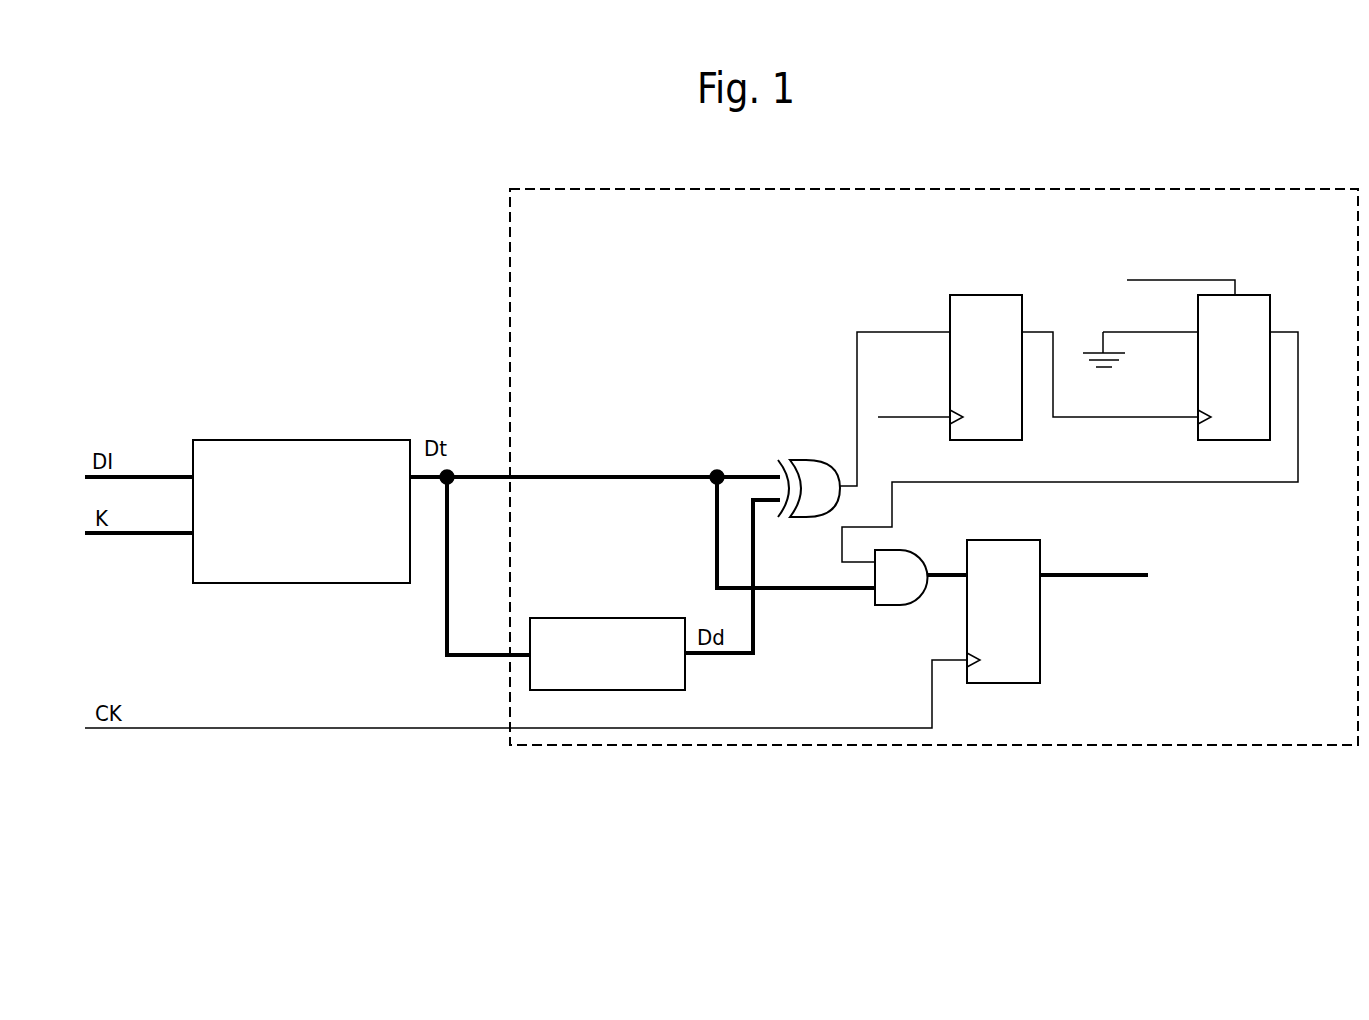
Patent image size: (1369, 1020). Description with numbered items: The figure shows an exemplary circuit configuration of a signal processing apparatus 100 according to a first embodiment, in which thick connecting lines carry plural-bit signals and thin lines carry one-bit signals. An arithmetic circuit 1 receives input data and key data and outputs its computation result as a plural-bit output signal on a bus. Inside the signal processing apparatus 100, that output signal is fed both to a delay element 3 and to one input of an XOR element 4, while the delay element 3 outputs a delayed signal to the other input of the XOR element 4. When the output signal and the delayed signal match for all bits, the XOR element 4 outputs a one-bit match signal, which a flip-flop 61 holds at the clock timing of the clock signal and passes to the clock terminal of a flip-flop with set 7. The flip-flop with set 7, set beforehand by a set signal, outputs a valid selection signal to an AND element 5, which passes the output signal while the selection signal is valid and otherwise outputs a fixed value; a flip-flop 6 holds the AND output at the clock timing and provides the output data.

The signal processing apparatus 100 is at (962, 189).
The arithmetic circuit 1 is at (290, 440).
The delay element 3 is at (598, 618).
The XOR element 4 is at (797, 460).
The AND element 5 is at (920, 550).
The flip-flop 6 is at (1013, 540).
The flip-flop 61 is at (963, 295).
The flip-flop with set 7 is at (1248, 295).